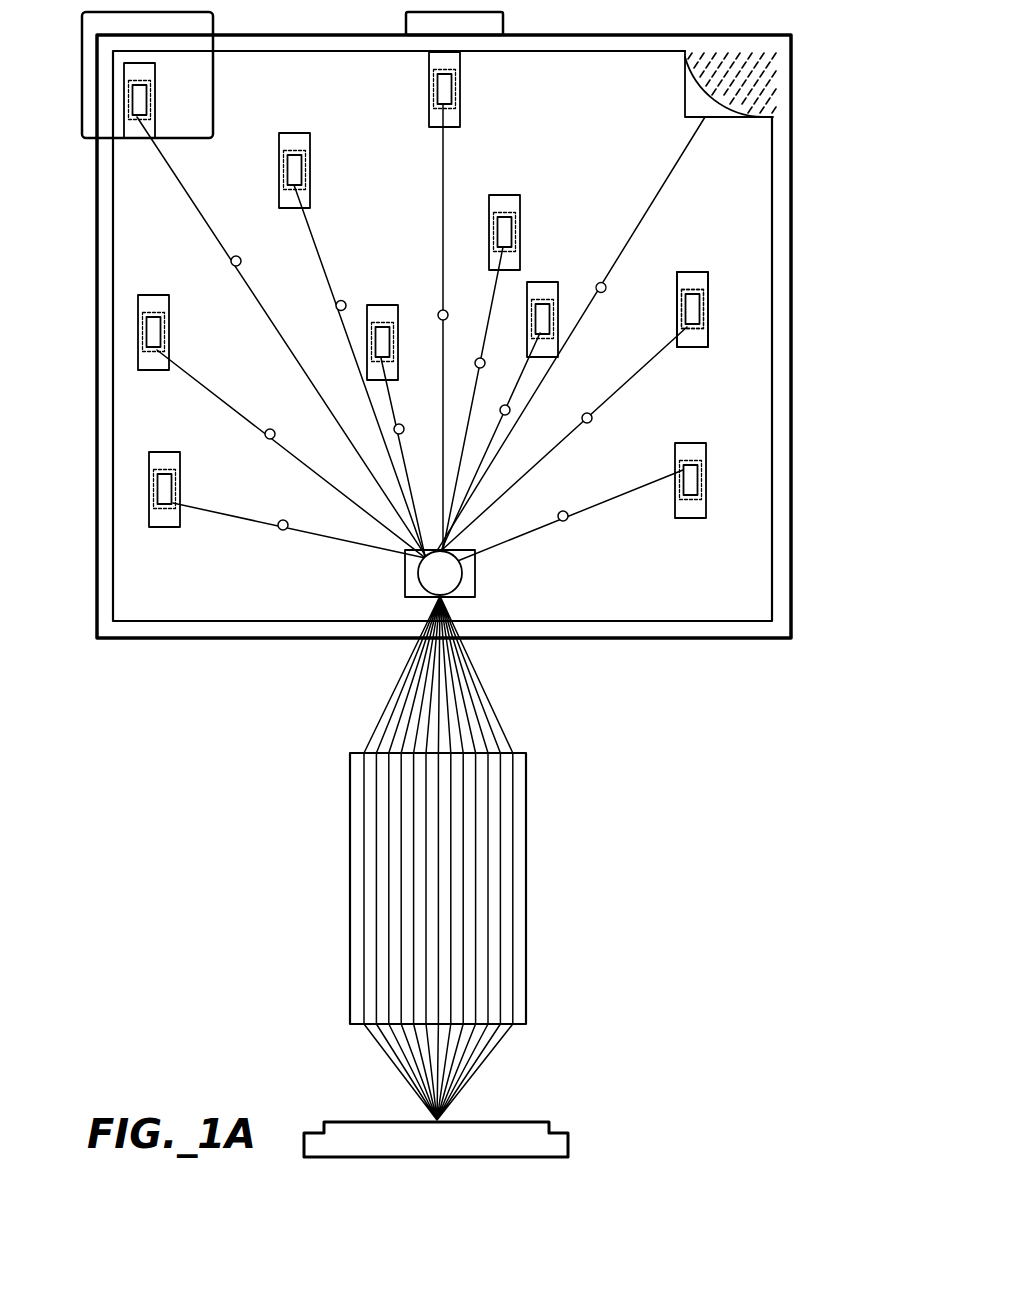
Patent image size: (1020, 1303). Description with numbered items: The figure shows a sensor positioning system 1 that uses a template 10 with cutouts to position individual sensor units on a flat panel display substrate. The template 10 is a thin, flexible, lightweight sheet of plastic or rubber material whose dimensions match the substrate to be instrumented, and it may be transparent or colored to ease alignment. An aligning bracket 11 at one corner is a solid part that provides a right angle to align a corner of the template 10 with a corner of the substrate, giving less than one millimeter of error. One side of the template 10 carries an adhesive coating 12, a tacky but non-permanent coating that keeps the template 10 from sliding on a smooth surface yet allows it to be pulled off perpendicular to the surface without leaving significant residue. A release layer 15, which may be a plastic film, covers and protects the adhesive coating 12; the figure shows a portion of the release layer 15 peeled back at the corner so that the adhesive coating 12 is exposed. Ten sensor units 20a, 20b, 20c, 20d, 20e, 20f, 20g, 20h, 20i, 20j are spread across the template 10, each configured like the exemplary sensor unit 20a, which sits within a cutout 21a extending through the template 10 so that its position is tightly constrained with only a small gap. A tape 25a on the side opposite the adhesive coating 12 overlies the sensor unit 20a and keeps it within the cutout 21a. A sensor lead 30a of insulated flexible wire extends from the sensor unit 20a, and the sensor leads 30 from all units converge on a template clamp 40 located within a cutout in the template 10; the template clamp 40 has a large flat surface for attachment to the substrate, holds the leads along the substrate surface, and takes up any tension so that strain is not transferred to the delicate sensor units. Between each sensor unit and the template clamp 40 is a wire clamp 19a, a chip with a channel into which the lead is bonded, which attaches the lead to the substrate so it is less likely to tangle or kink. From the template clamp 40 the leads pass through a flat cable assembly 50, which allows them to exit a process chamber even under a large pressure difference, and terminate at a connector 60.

The sensor positioning system 1 is at (236, 769).
The template 10 is at (792, 62).
The aligning bracket 11 is at (92, 18).
The adhesive coating 12 is at (772, 88).
The release layer 15 is at (773, 200).
The wire clamp 19a is at (587, 412).
The sensor unit 20a is at (695, 315).
The sensor unit 20b is at (698, 480).
The sensor unit 20c is at (173, 492).
The sensor unit 20d is at (161, 335).
The sensor unit 20e is at (146, 100).
The sensor unit 20f is at (302, 170).
The sensor unit 20g is at (380, 335).
The sensor unit 20h is at (452, 92).
The sensor unit 20i is at (512, 232).
The sensor unit 20j is at (543, 310).
The cutout 21a is at (708, 298).
The tape 25a is at (697, 340).
The sensor leads 30 is at (520, 707).
The sensor lead 30a is at (643, 365).
The template clamp 40 is at (463, 573).
The flat cable assembly 50 is at (526, 990).
The connector 60 is at (568, 1145).